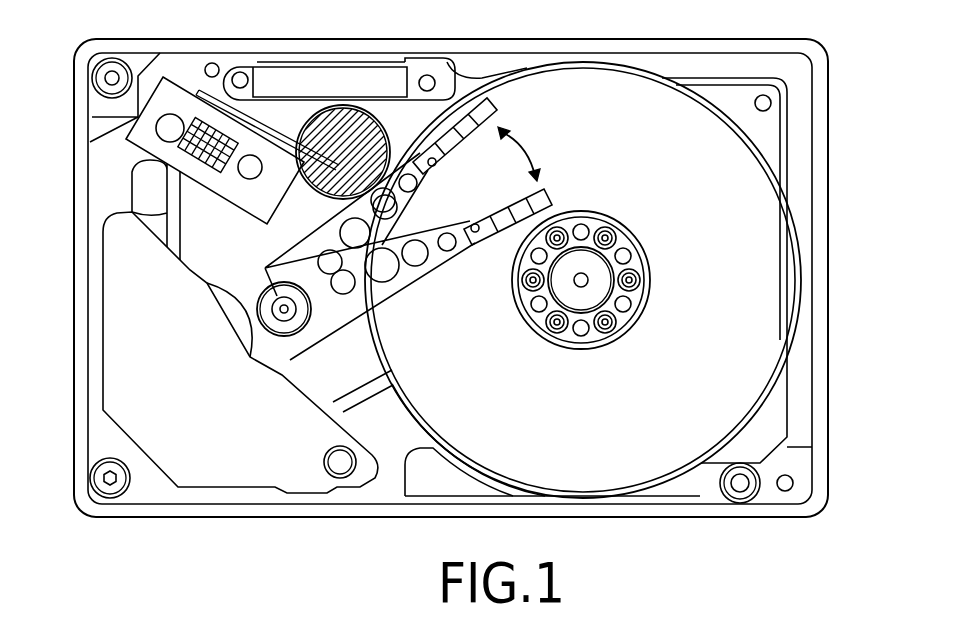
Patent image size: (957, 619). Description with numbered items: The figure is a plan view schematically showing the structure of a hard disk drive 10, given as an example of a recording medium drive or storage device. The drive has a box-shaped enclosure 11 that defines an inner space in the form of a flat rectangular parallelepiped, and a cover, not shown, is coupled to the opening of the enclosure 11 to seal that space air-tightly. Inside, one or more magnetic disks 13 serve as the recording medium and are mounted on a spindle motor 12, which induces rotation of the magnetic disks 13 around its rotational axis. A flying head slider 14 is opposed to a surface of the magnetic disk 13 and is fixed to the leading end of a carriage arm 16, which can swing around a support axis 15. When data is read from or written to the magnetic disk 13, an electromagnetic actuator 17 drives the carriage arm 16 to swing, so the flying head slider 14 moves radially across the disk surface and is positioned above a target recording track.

The hard disk drive 10 is at (396, 34).
The enclosure 11 is at (620, 39).
The spindle motor 12 is at (602, 288).
The magnetic disk 13 is at (582, 436).
The flying head slider 14 is at (532, 200).
The support axis 15 is at (265, 268).
The carriage arm 16 is at (410, 283).
The electromagnetic actuator 17 is at (226, 441).